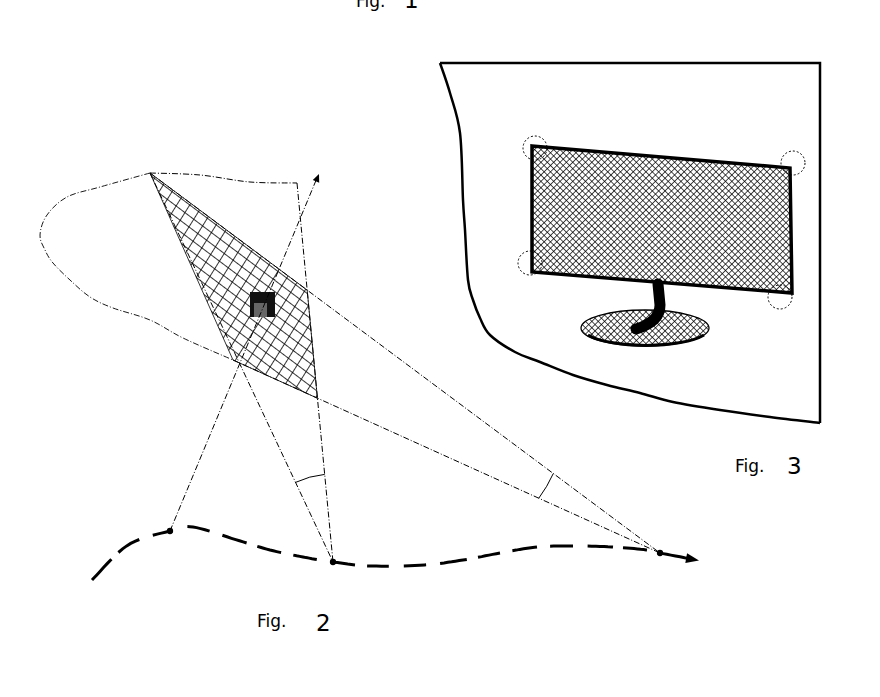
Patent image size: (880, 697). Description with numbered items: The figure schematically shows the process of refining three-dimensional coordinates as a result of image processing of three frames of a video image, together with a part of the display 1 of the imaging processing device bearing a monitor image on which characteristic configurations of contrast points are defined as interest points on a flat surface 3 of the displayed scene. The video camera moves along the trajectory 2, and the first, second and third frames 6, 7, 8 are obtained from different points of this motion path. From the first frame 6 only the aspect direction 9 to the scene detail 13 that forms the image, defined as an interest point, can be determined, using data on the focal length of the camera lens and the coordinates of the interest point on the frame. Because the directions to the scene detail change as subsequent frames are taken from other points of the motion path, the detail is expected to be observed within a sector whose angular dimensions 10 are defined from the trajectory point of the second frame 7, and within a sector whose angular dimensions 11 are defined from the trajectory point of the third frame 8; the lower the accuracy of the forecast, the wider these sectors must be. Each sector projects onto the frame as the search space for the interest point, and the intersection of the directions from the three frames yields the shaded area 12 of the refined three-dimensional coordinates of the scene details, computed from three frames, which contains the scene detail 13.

In FIG. 3, the display of the imaging processing device 1 is at (632, 83).
In FIG. 2, the trajectory of the imaging processing device camera 2 is at (123, 540).
In FIG. 3, the flat surface of the displayed scene 3 is at (600, 180).
In FIG. 2, the first frame 6 is at (170, 531).
In FIG. 2, the second frame 7 is at (333, 562).
In FIG. 2, the third frame 8 is at (660, 553).
In FIG. 2, the direction to the scene detail 9 is at (303, 205).
In FIG. 2, the angular dimensions of the sector for the second frame 10 is at (325, 476).
In FIG. 2, the angular dimensions of the sector for the third frame 11 is at (540, 475).
In FIG. 2, the shaded area of the refined 3D coordinates 12 is at (240, 355).
In FIG. 3, the shaded area of the refined 3D coordinates 12 is at (530, 263).
In FIG. 2, the scene detail 13 is at (248, 313).